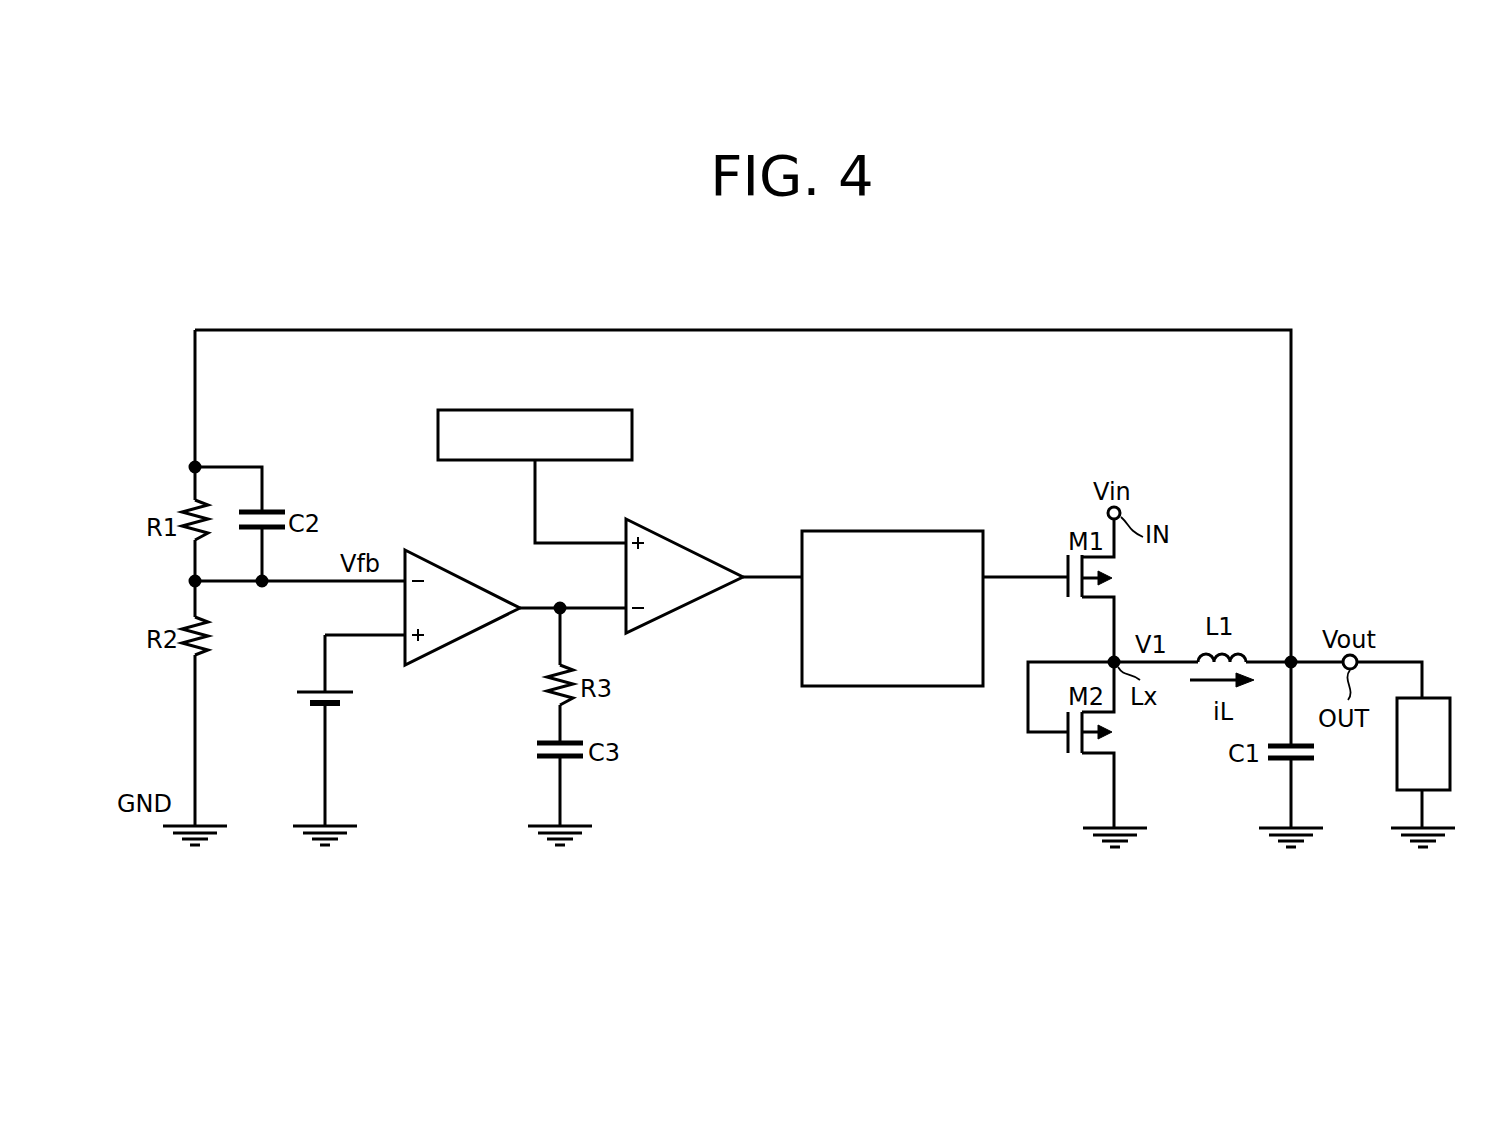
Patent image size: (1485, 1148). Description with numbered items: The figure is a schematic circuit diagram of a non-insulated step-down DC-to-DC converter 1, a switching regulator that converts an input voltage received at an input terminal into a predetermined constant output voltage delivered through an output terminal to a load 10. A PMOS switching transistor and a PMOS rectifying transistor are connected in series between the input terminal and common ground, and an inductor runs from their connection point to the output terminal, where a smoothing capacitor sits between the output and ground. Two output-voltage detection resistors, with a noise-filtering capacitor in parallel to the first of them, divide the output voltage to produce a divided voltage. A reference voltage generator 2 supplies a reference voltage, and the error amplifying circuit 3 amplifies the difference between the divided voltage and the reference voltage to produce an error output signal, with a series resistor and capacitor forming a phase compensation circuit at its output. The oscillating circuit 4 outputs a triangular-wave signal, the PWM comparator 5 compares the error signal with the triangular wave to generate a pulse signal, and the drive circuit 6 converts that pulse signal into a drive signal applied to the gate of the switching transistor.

The step-down DC-to-DC converter 1 is at (1052, 303).
The reference voltage generator 2 is at (301, 700).
The error amplifying circuit 3 is at (452, 579).
The oscillating circuit 4 is at (614, 410).
The PWM comparator 5 is at (676, 544).
The drive circuit 6 is at (965, 532).
The load 10 is at (1433, 697).